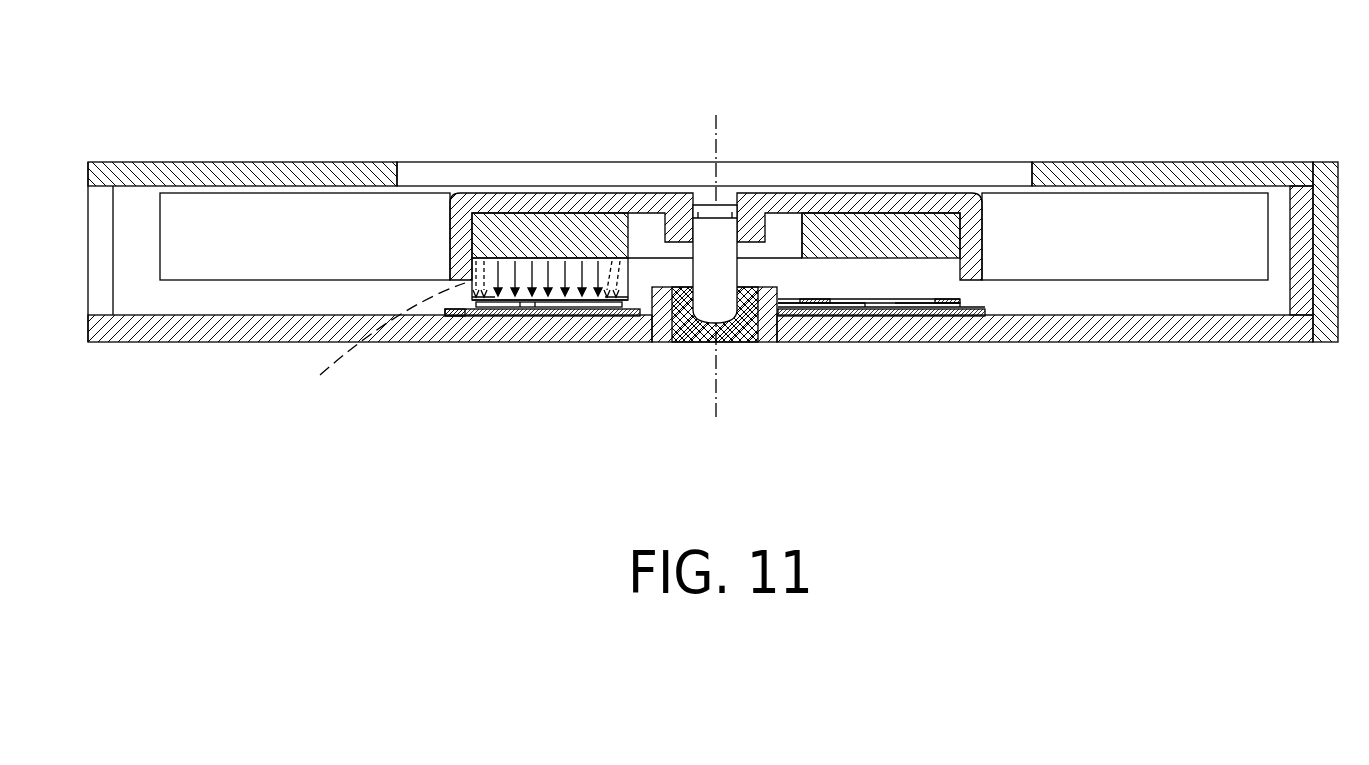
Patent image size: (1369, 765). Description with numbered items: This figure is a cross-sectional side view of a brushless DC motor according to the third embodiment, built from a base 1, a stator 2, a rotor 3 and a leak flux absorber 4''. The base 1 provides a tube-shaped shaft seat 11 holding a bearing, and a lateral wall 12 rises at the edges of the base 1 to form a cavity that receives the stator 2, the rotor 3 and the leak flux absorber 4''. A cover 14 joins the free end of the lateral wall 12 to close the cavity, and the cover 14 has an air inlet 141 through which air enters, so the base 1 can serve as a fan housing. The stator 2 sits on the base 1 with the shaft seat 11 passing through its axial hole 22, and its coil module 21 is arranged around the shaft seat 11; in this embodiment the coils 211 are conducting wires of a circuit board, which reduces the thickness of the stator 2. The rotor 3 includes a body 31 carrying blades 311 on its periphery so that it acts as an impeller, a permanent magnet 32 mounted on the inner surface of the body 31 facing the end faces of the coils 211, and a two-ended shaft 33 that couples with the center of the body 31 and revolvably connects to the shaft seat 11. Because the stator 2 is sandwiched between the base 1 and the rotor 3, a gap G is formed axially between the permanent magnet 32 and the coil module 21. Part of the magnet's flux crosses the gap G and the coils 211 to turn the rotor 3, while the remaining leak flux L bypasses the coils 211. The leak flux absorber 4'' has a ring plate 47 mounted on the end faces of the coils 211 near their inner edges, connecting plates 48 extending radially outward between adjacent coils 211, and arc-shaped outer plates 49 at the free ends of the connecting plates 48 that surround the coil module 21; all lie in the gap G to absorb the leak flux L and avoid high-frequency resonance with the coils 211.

The base 1 is at (1221, 347).
The cover 14 is at (290, 165).
The air inlet 141 is at (440, 170).
The lateral wall 12 is at (1303, 195).
The blades 311 is at (1103, 215).
The rotor 3 is at (535, 186).
The body 31 is at (783, 225).
The permanent magnet 32 is at (885, 235).
The shaft 33 is at (722, 302).
The axial hole 22 is at (648, 320).
The shaft seat 11 is at (777, 290).
The gap G is at (635, 270).
The coil module 21 is at (529, 311).
The stator 2 is at (497, 326).
The coils 211 is at (522, 305).
The ring plate 47 is at (815, 299).
The connecting plates 48 is at (912, 300).
The outer plates 49 is at (948, 299).
The leak flux L is at (382, 345).
The leak flux absorber 4'' is at (409, 375).